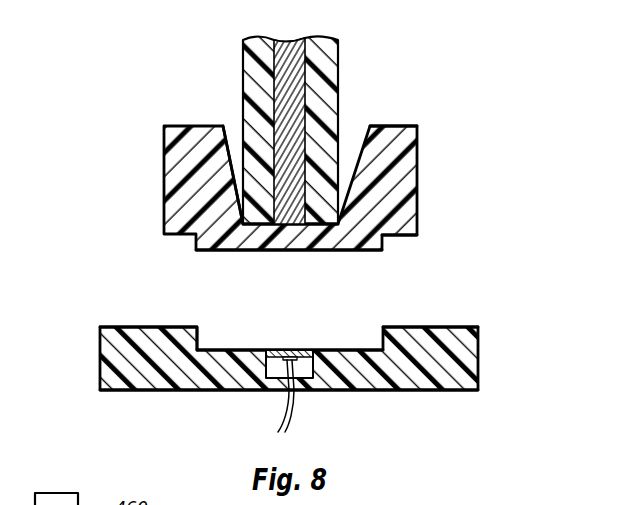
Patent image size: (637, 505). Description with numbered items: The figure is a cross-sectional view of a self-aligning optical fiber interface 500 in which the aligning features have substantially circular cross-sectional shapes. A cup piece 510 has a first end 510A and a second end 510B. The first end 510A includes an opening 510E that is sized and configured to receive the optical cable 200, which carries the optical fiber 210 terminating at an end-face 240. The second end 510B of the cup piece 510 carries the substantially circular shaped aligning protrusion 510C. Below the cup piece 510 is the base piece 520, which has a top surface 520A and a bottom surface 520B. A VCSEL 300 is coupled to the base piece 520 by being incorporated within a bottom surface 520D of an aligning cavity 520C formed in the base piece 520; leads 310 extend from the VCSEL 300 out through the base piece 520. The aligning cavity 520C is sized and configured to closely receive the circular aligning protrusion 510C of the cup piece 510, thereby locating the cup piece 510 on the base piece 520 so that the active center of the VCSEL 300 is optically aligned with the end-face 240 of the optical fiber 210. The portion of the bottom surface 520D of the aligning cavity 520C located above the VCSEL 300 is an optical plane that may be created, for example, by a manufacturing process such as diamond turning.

The mold assembly 500 is at (157, 112).
The cup piece 510 is at (418, 156).
The first end 510A is at (404, 127).
The second end 510B is at (404, 241).
The aligning protrusion 510C is at (378, 252).
The opening 510E is at (228, 140).
The end-face 240 is at (290, 227).
The optical cable 200 is at (340, 108).
The optical fiber 210 is at (308, 60).
The base piece 520 is at (480, 357).
The top surface 520A is at (447, 328).
The bottom surface 520B is at (437, 390).
The aligning cavity 520C is at (205, 338).
The bottom surface of the aligning cavity 520D is at (325, 350).
The VCSEL 300 is at (322, 390).
The sensor lead 310 is at (285, 380).